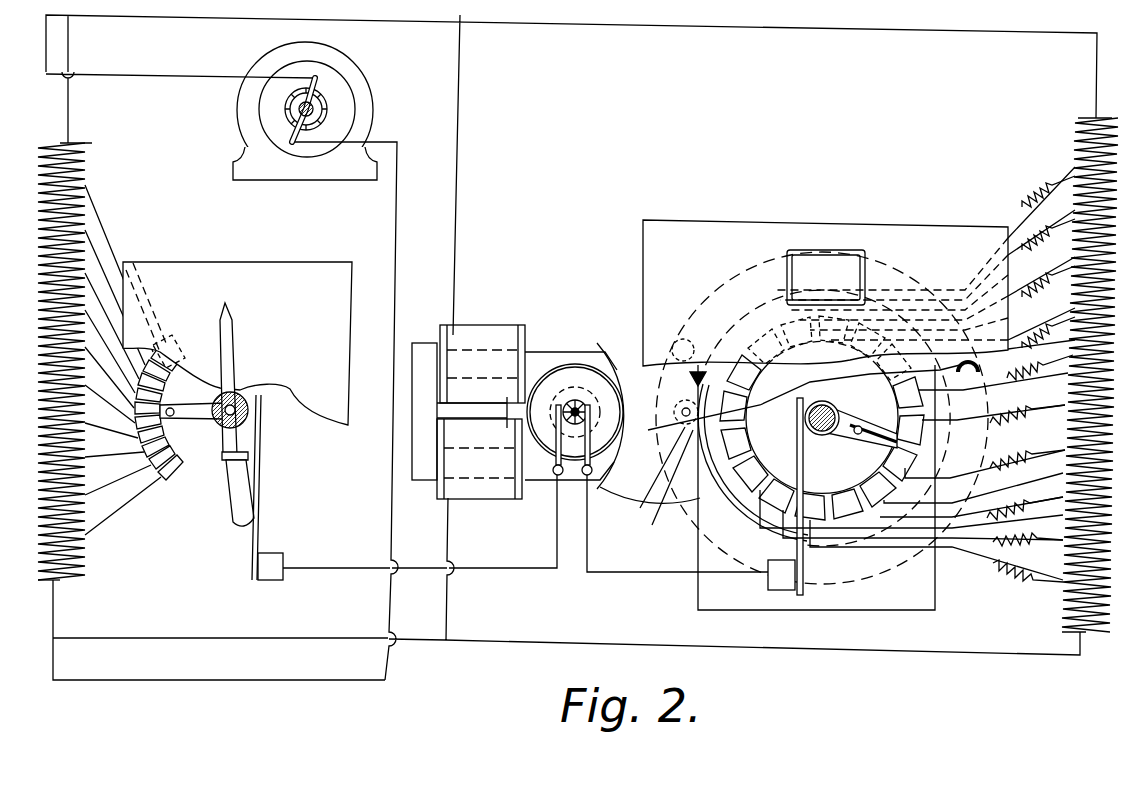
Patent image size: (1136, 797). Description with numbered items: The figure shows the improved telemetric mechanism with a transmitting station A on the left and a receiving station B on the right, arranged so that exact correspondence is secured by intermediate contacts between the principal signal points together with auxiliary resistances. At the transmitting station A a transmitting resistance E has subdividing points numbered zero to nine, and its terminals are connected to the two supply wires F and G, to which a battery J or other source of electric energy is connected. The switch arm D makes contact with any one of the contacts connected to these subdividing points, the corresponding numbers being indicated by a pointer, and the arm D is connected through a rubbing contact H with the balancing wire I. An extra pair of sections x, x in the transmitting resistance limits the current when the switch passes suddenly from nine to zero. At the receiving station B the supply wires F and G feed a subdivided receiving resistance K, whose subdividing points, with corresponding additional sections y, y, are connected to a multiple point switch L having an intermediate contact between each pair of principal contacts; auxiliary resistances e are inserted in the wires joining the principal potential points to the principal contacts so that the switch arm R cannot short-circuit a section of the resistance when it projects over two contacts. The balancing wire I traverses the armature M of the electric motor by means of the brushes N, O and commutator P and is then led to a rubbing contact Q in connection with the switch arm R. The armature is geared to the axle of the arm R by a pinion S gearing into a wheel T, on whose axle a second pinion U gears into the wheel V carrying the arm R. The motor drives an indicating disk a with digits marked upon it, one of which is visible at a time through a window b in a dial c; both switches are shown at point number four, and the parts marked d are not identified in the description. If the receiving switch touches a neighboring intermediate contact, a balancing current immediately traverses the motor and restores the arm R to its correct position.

The transmitting station A is at (197, 718).
The receiving station B is at (1008, 718).
The supply wire F is at (225, 20).
The battery J is at (346, 100).
The additional sections of transmitting resistance x is at (90, 176).
The transmitting resistance E is at (85, 251).
The switch arm D is at (183, 421).
The rubbing contact H is at (264, 463).
The dial c is at (224, 512).
The balancing wire I is at (353, 569).
The supply wire G is at (354, 641).
The electromagnet coils d is at (485, 334).
The armature M is at (556, 381).
The commutator P is at (578, 398).
The pinion S is at (590, 398).
The brush N is at (555, 473).
The brush O is at (585, 473).
The wheel T is at (633, 358).
The indicating disk a is at (802, 410).
The second pinion U is at (678, 428).
The wheel V is at (690, 505).
The window b is at (812, 260).
The auxiliary resistances e is at (648, 277).
The receiving resistance K is at (1050, 196).
The additional sections of receiving resistance y is at (1075, 141).
The switch arm R is at (846, 424).
The rubbing contact Q is at (794, 418).
The multiple point switch L is at (866, 616).